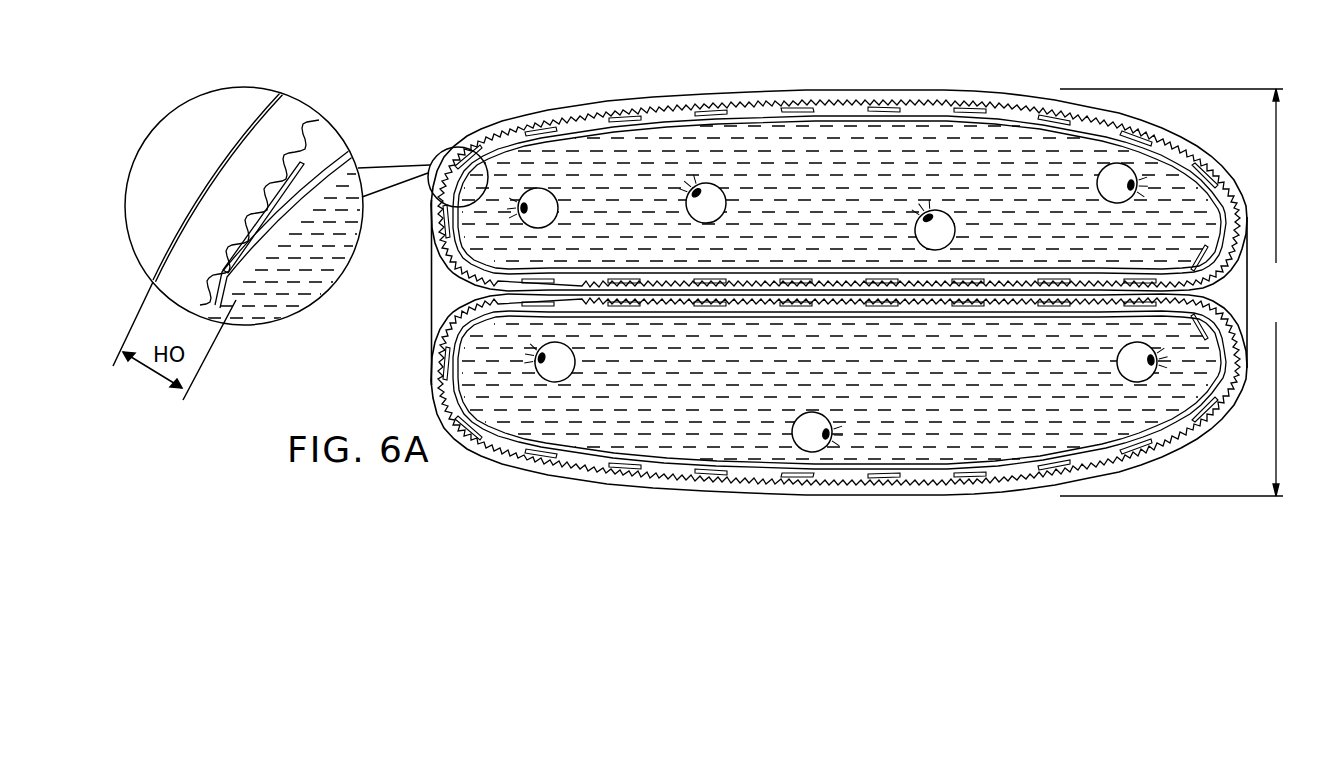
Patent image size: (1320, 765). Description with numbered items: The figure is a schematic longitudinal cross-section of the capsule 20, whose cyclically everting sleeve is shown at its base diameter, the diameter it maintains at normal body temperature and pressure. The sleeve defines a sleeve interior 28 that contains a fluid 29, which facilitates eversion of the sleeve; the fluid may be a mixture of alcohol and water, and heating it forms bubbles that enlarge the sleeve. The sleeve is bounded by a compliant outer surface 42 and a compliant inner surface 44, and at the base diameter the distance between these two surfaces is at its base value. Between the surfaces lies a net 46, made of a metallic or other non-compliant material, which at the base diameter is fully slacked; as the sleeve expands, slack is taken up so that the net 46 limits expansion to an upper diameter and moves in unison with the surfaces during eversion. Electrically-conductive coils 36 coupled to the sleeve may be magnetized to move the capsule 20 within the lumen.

The capsule 20 is at (1185, 96).
The sleeve interior 28 is at (812, 209).
The fluid 29 is at (836, 138).
The electrically-conductive coil 36 is at (302, 160).
The outer surface 42 is at (776, 92).
The inner surface 44 is at (912, 120).
The net 46 is at (968, 103).